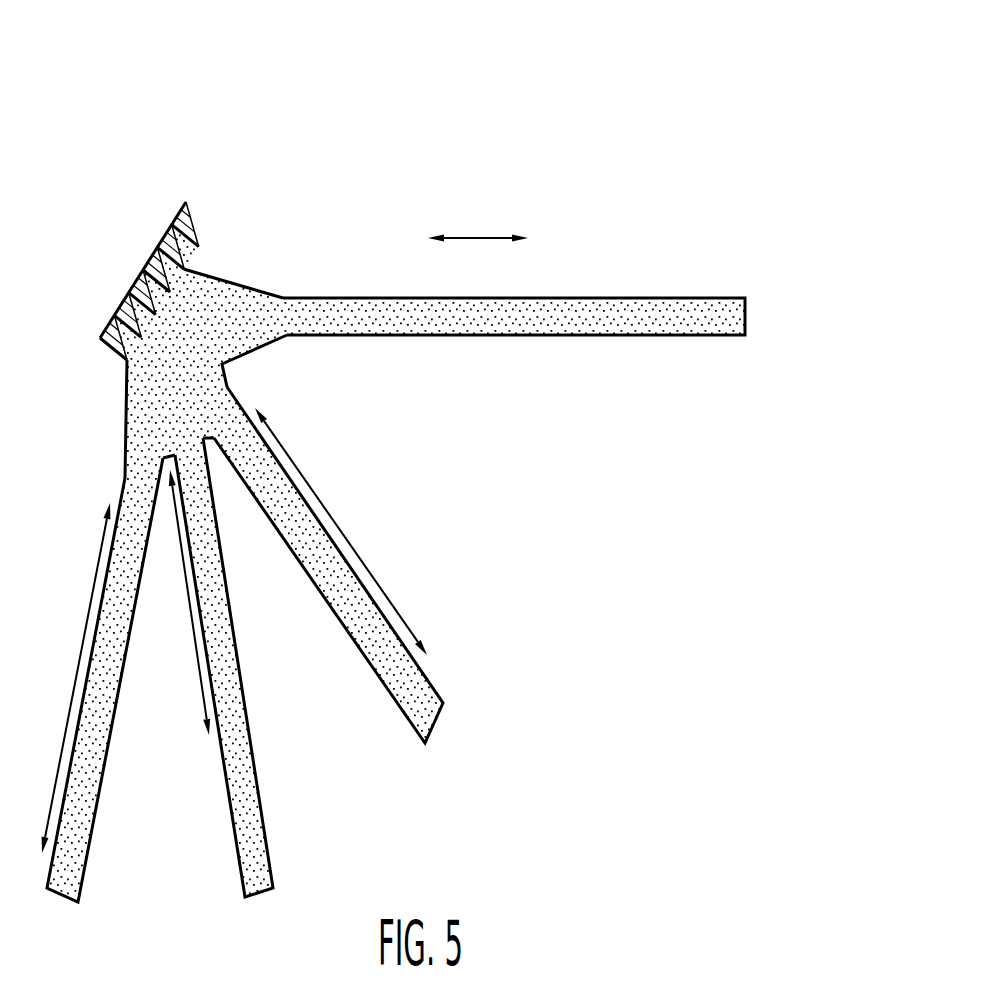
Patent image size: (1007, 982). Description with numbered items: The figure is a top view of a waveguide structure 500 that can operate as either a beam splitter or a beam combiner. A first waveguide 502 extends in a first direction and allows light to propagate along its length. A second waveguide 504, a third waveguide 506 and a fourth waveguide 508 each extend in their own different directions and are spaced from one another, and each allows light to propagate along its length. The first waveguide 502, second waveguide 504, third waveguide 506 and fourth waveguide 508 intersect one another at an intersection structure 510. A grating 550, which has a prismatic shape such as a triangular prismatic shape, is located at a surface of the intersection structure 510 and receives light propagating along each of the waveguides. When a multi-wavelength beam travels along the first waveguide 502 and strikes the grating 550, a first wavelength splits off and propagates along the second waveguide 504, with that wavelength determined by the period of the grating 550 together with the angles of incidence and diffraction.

The waveguide structure 500 is at (755, 93).
The first waveguide 502 is at (738, 317).
The second waveguide 504 is at (427, 697).
The third waveguide 506 is at (260, 860).
The fourth waveguide 508 is at (78, 865).
The intersection structure 510 is at (222, 282).
The grating 550 is at (134, 280).